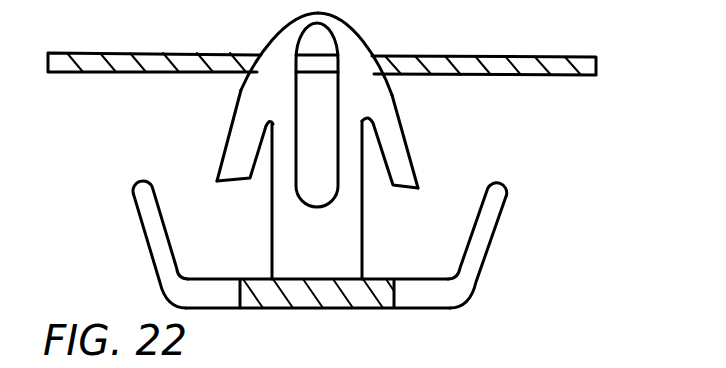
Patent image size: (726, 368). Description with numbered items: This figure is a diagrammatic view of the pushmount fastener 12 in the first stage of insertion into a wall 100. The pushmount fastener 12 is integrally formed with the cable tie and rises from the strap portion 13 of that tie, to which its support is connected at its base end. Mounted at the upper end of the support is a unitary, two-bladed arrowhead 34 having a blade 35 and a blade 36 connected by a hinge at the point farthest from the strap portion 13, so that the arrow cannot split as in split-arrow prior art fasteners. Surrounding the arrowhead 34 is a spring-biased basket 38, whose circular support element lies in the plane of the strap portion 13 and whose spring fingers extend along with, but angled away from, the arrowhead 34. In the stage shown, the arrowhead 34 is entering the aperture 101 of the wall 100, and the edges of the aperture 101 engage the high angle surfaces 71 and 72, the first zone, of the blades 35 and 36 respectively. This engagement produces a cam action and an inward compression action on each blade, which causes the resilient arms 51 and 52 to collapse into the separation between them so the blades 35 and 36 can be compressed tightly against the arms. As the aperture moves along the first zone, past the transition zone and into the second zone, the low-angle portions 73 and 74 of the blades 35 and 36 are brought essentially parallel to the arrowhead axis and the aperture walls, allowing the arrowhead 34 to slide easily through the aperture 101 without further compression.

The pushmount fastener 12 is at (342, 211).
The strap portion 13 is at (384, 301).
The arrowhead 34 is at (332, 94).
The blade 35 is at (385, 114).
The blade 36 is at (257, 88).
The spring-biased basket 38 is at (140, 194).
The resilient arm 51 is at (261, 152).
The resilient arm 52 is at (280, 168).
The high angle surface 71 is at (390, 83).
The high angle surface 72 is at (281, 34).
The low-angle portion 73 is at (411, 152).
The low-angle portion 74 is at (232, 125).
The wall 100 is at (512, 57).
The aperture 101 is at (382, 55).